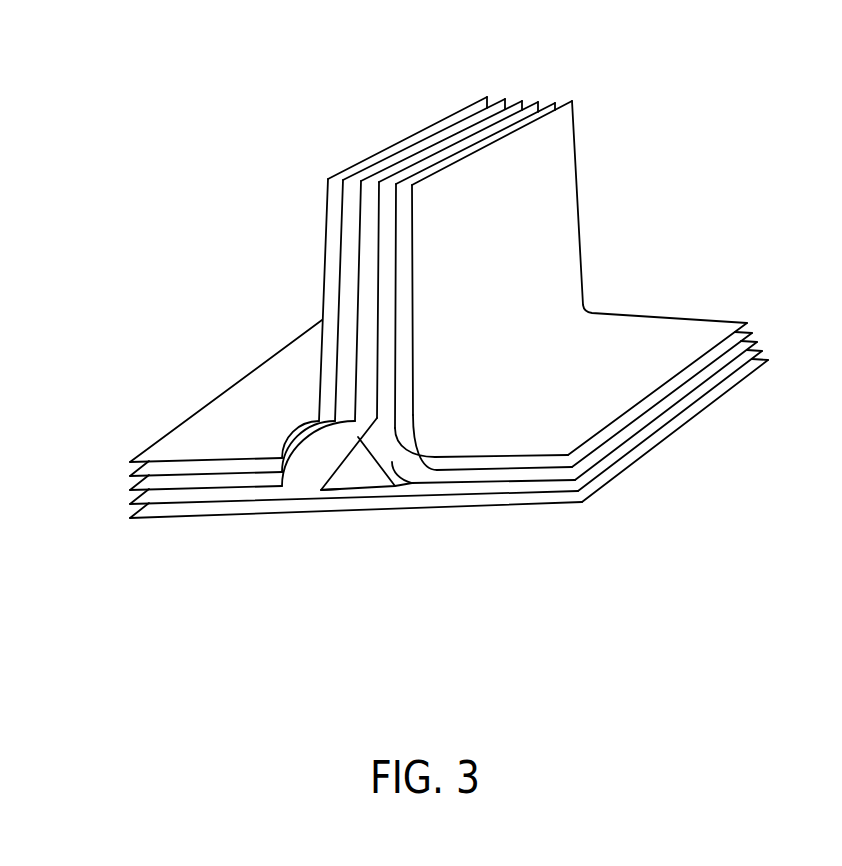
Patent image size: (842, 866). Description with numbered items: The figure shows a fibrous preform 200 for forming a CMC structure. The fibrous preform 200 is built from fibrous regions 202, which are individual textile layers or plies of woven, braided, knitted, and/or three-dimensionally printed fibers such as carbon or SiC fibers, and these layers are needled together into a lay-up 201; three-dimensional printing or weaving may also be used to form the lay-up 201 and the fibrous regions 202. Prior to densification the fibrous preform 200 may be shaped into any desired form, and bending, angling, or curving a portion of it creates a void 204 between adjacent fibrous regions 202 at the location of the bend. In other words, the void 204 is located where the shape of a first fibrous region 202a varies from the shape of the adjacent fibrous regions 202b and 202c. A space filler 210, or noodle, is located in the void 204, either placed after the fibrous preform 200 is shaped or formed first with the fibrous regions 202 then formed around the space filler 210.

The fibrous preform 200 is at (323, 133).
The lay-up 201 is at (120, 454).
The fibrous regions 202 is at (314, 376).
The first fibrous region 202a is at (395, 468).
The adjacent fibrous region 202b is at (338, 450).
The adjacent fibrous region 202c is at (360, 498).
The void 204 is at (307, 496).
The space filler 210 is at (355, 460).